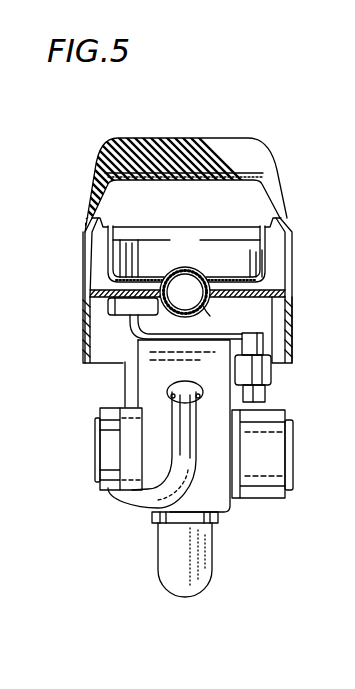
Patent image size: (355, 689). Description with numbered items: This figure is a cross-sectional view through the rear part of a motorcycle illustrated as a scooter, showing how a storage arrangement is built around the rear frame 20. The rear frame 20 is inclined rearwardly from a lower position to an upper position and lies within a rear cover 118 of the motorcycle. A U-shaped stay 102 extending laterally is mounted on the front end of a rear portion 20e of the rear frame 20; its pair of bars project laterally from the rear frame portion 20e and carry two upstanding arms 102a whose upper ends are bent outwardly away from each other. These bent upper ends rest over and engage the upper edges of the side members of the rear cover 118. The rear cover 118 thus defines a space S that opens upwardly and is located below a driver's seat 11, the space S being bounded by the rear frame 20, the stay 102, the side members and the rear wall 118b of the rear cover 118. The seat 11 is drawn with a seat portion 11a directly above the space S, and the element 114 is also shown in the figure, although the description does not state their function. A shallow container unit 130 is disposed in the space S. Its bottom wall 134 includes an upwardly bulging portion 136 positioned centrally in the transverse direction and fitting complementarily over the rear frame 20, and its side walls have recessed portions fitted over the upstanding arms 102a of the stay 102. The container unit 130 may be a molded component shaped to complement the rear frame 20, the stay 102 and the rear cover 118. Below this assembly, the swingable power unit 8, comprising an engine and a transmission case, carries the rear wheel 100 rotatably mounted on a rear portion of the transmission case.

The driver's seat 11 is at (182, 154).
The cap liner 11a is at (228, 186).
The rear wall 118b is at (160, 256).
The rear cover 118 is at (80, 337).
The U-shaped stay 102 is at (103, 265).
The upstanding arms 102a is at (88, 254).
The bottom wall 134 is at (135, 240).
The upwardly bulging portion 136 is at (200, 263).
The container unit 130 is at (180, 265).
The space S is at (289, 278).
The fitting block 114 is at (104, 306).
The rear frame 20 is at (165, 317).
The rear portion 20e is at (205, 302).
The power unit 8 is at (148, 447).
The rear wheel 100 is at (178, 578).